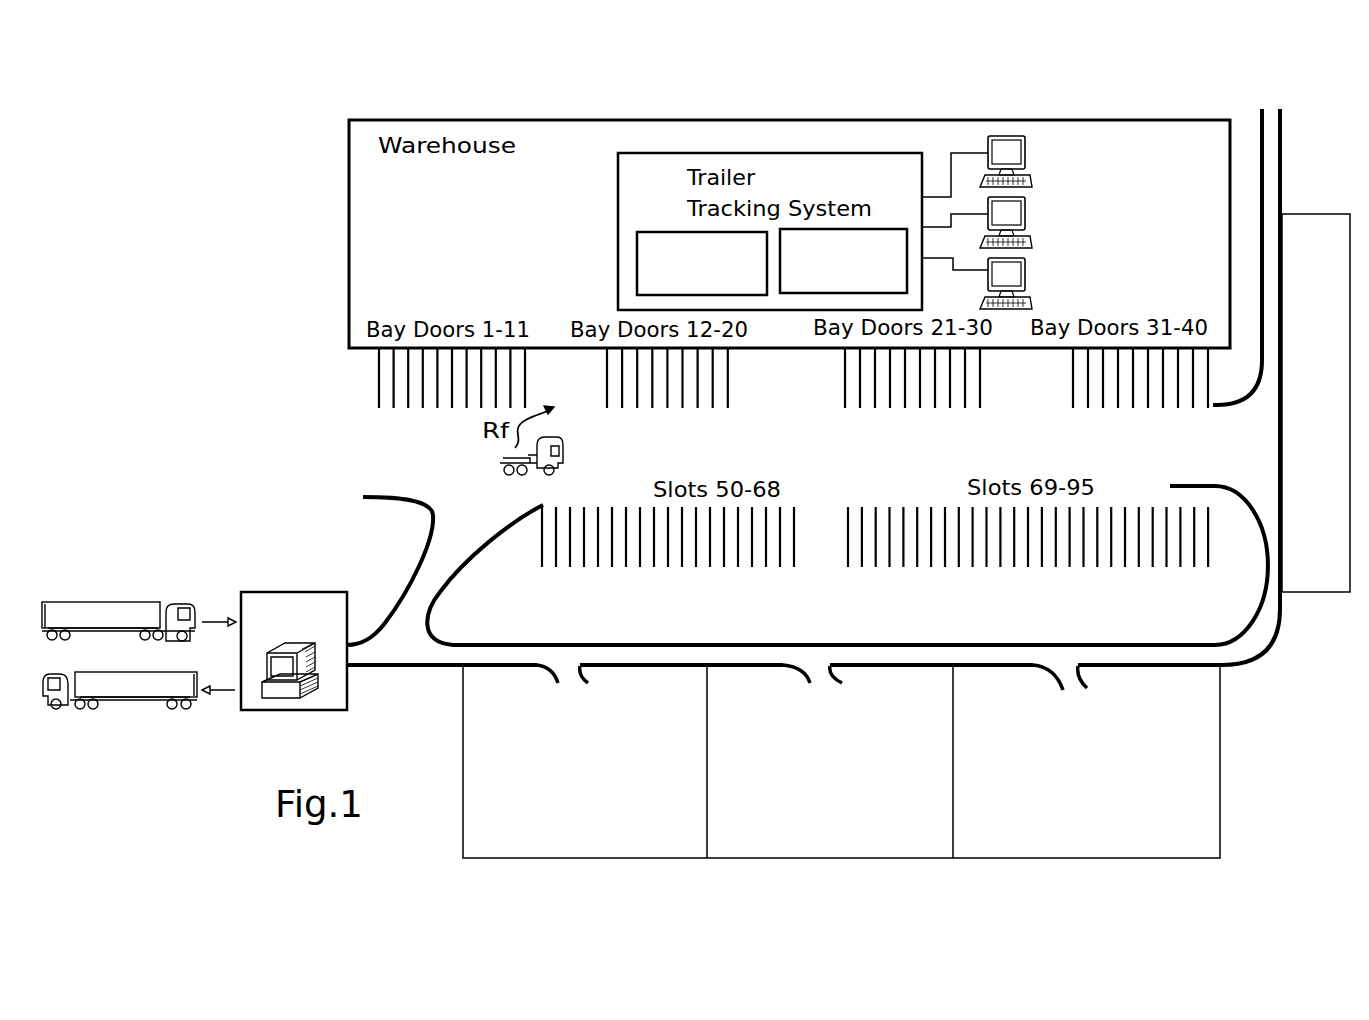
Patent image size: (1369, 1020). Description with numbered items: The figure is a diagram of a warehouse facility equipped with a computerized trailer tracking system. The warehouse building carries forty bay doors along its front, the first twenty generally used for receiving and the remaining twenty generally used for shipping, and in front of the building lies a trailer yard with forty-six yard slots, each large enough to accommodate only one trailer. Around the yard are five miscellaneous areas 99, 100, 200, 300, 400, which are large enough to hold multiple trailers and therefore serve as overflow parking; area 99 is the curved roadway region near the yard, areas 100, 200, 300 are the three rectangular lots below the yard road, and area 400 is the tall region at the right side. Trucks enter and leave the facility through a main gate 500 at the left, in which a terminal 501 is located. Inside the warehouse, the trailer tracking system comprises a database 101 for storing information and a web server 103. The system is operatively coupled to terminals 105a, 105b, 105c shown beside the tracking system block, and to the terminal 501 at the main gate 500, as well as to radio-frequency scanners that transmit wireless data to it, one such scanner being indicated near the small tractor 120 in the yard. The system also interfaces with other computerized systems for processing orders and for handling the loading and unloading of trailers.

The miscellaneous area 99 is at (807, 549).
The miscellaneous area 100 is at (585, 761).
The miscellaneous area 200 is at (830, 761).
The miscellaneous area 300 is at (1086, 761).
The miscellaneous area 400 is at (1316, 403).
The main gate 500 is at (277, 652).
The terminal 501 is at (373, 727).
The database 101 is at (660, 247).
The web server 103 is at (887, 238).
The terminal 105a is at (1027, 157).
The terminal 105b is at (1027, 218).
The terminal 105c is at (1027, 277).
The yard tractor 120 is at (563, 462).